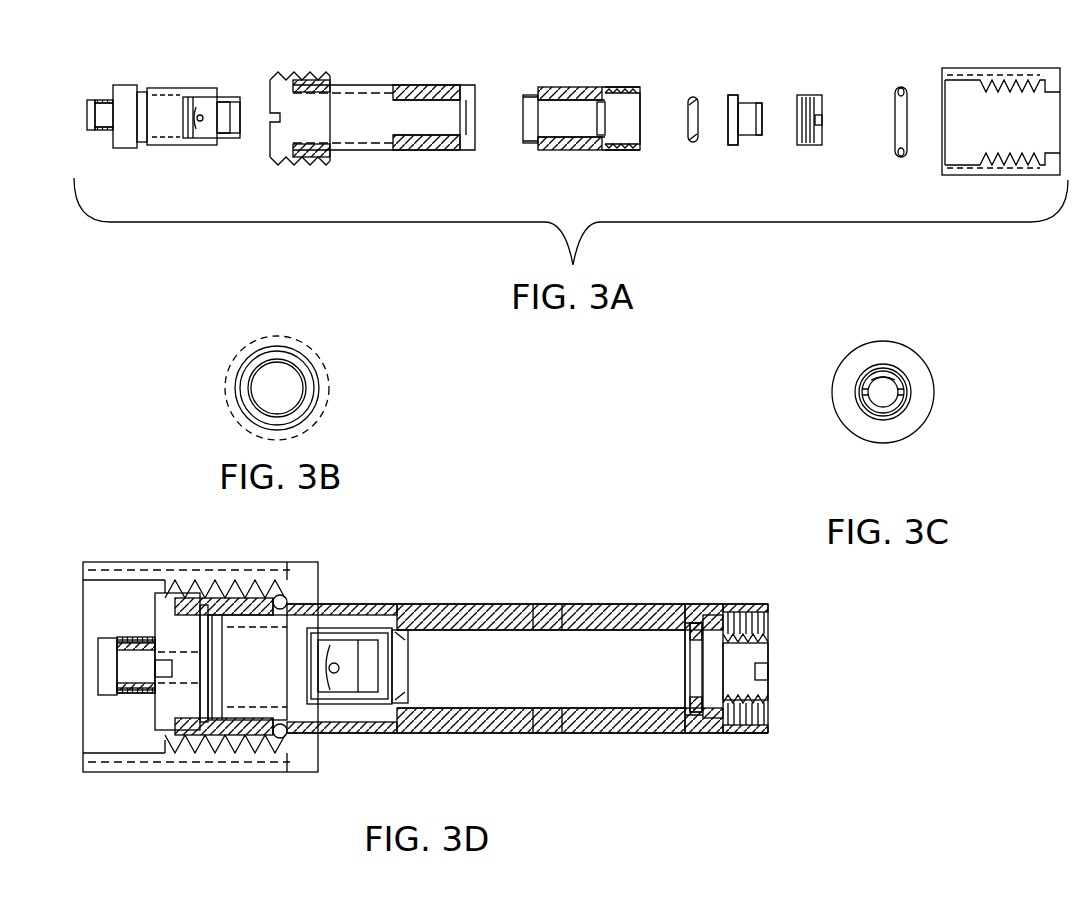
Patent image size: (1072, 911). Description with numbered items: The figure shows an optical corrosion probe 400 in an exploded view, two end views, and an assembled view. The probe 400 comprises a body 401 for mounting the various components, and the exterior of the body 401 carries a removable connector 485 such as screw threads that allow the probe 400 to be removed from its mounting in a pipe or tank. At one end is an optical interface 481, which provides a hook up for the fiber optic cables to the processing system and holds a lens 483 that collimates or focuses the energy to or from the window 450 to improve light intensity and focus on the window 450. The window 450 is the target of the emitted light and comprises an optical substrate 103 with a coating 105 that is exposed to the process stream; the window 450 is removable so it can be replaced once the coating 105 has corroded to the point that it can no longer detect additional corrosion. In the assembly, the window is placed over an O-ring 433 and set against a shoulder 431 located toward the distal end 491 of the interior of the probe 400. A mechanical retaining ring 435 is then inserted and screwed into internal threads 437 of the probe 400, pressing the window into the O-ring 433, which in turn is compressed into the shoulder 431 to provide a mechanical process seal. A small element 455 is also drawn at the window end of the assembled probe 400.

In FIG. 3A, the connector assembly 400 is at (466, 56).
In FIG. 3B, the connector assembly 400 is at (320, 330).
In FIG. 3C, the connector assembly 400 is at (926, 337).
In FIG. 3D, the connector assembly 400 is at (507, 546).
In FIG. 3A, the tube 401 is at (447, 152).
In FIG. 3D, the tube 401 is at (585, 734).
In FIG. 3A, the pin connector 481 is at (185, 87).
In FIG. 3D, the pin connector 481 is at (372, 727).
In FIG. 3A, the inner contact 483 is at (203, 102).
In FIG. 3D, the inner contact 483 is at (340, 645).
In FIG. 3A, the threaded nut 485 is at (303, 78).
In FIG. 3D, the threaded nut 485 is at (218, 605).
In FIG. 3A, the sleeve body 431 is at (612, 88).
In FIG. 3D, the sleeve body 431 is at (687, 623).
In FIG. 3A, the threaded nut 437 is at (627, 150).
In FIG. 3D, the threaded nut 437 is at (733, 612).
In FIG. 3A, the threads 491 is at (638, 90).
In FIG. 3D, the threads 491 is at (768, 610).
In FIG. 3A, the pin 433 is at (695, 97).
In FIG. 3D, the pin 433 is at (693, 720).
In FIG. 3A, the cap 450 is at (750, 88).
In FIG. 3D, the cap 450 is at (768, 627).
In FIG. 3A, the flange 103 is at (743, 138).
In FIG. 3C, the flange 103 is at (863, 373).
In FIG. 3A, the center opening 105 is at (764, 98).
In FIG. 3C, the center opening 105 is at (884, 402).
In FIG. 3A, the retainer 435 is at (820, 146).
In FIG. 3C, the retainer 435 is at (868, 407).
In FIG. 3D, the retainer 435 is at (745, 734).
In FIG. 3D, the key 455 is at (769, 658).